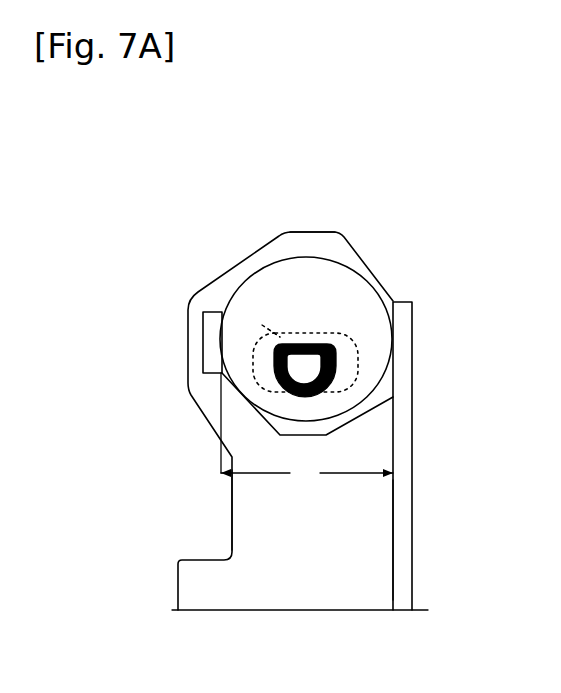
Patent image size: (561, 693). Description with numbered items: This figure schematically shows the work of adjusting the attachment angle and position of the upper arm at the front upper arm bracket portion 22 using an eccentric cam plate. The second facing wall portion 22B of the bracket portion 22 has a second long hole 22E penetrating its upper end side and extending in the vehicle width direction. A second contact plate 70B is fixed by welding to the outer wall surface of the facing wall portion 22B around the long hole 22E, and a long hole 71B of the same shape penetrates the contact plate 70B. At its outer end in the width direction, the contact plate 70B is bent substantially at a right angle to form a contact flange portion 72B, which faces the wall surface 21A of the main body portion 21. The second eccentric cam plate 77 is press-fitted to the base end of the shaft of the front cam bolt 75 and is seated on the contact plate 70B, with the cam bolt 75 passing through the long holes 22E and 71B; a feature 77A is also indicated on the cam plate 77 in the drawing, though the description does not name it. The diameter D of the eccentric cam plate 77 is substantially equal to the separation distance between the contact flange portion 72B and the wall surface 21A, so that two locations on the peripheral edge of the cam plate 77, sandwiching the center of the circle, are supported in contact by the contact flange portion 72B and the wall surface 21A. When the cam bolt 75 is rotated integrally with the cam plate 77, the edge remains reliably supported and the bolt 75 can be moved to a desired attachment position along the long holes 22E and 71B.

The front upper arm bracket portion 22 is at (150, 407).
The second contact plate 70B is at (294, 231).
The second eccentric cam plate 77 is at (331, 268).
The front cam bolt 75 is at (311, 362).
The hidden engagement portion 77A is at (357, 338).
The second long hole 22E is at (262, 325).
The long hole 71B is at (274, 333).
The contact flange portion 72B is at (203, 343).
The main body portion 21 is at (413, 437).
The wall surface 21A is at (393, 537).
The second facing wall portion 22B is at (231, 520).
The diameter D is at (307, 473).